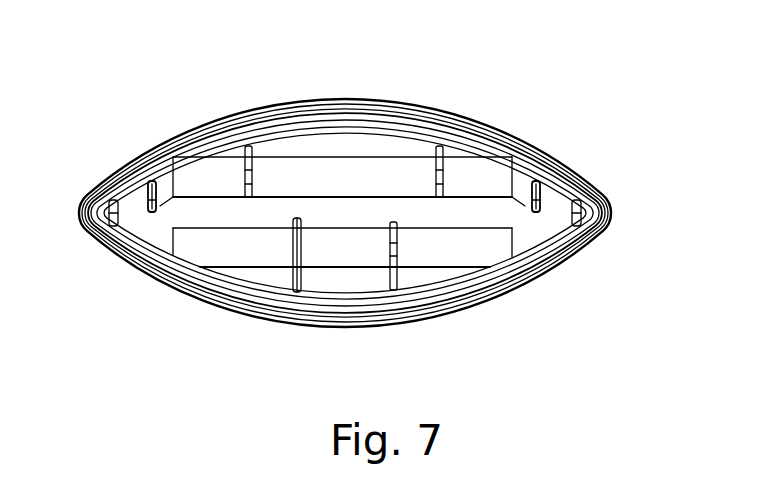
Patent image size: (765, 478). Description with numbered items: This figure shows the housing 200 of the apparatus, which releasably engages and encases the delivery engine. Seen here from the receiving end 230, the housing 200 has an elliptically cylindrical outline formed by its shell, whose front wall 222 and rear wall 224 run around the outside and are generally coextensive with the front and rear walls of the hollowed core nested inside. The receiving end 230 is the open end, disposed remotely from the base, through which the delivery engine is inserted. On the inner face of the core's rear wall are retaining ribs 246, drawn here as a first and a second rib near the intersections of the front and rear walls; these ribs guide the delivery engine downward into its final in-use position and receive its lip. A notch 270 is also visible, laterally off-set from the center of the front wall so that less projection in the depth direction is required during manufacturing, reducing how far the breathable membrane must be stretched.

The housing 200 is at (355, 211).
The front wall 222 is at (470, 304).
The rear wall 224 is at (372, 100).
The receiving end 230 is at (508, 213).
The retaining ribs 246 is at (152, 183).
The notch 270 is at (292, 258).